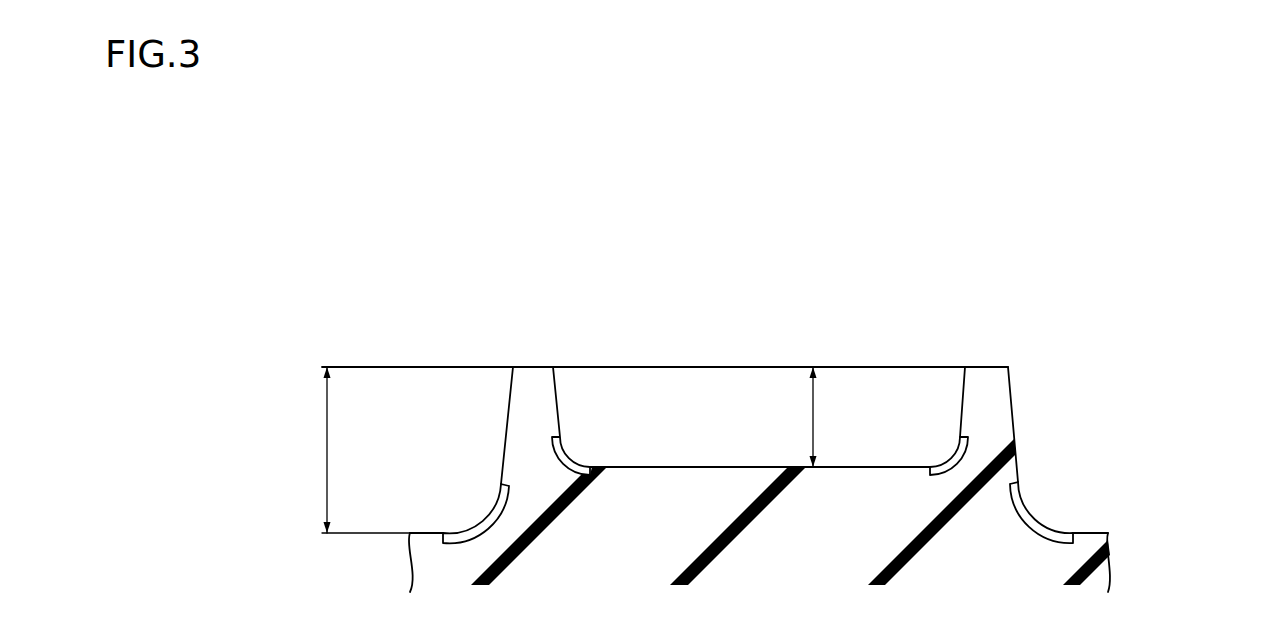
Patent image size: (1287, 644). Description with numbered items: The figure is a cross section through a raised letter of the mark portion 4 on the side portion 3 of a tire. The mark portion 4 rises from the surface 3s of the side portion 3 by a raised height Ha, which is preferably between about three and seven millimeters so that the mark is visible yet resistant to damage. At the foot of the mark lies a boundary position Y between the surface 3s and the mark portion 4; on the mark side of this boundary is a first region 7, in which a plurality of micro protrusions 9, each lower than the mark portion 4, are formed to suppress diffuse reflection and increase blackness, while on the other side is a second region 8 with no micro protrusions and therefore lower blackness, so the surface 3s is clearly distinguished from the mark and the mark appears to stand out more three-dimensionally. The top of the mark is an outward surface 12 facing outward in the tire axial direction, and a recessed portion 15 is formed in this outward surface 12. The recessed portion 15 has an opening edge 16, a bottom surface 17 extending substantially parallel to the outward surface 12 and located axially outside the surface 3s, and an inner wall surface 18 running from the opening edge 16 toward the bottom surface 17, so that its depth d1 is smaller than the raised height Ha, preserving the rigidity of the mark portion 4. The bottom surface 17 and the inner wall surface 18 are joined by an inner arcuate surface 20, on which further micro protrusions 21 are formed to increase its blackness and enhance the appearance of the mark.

The side portion 3 is at (1158, 494).
The surface of the side portion 3s is at (428, 532).
The mark portion 4 is at (822, 387).
The first region 7 is at (1035, 508).
The second region 8 is at (1115, 523).
The micro protrusions 9 is at (1023, 490).
The outward surface 12 is at (530, 370).
The recessed portion 15 is at (759, 362).
The opening edge 16 is at (965, 368).
The bottom surface 17 is at (707, 467).
The inner wall surface 18 is at (766, 367).
The inner arcuate surface 20 is at (565, 460).
The micro protrusions 21 is at (945, 455).
The boundary position Y is at (443, 538).
The raised height of the mark portion Ha is at (348, 450).
The depth of the recessed portion d1 is at (813, 418).